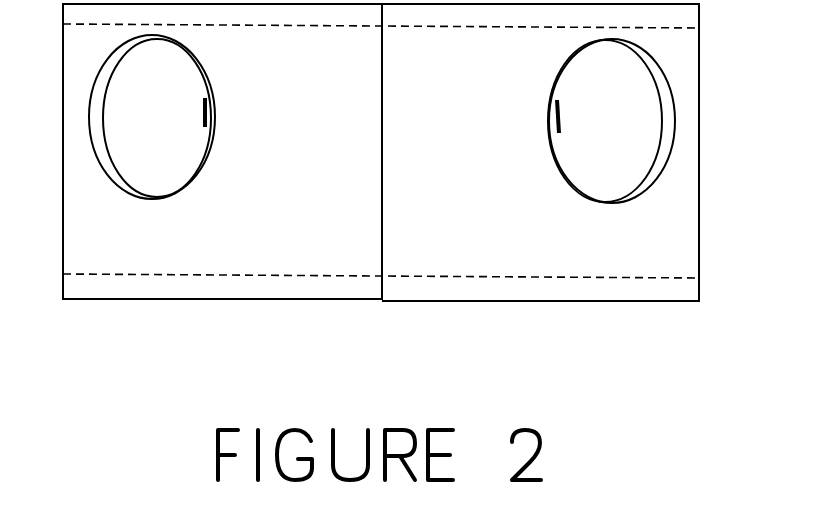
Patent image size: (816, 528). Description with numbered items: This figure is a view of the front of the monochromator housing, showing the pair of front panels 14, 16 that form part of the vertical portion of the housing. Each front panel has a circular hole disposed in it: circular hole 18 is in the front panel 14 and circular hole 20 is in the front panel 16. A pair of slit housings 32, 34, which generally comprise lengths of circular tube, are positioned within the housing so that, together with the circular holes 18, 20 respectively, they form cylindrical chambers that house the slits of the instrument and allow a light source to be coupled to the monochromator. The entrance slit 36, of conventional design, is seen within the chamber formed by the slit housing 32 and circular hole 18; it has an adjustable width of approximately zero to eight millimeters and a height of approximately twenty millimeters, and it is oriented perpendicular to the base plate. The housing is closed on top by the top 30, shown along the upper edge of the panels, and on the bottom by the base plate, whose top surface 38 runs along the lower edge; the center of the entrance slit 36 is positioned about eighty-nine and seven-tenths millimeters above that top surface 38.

The front panel 14 is at (307, 268).
The front panel 16 is at (488, 268).
The circular hole 18 is at (186, 172).
The circular hole 20 is at (566, 176).
The top 30 is at (330, 29).
The slit housing 32 is at (165, 113).
The slit housing 34 is at (625, 120).
The entrance slit 36 is at (210, 118).
The top surface 38 is at (115, 276).